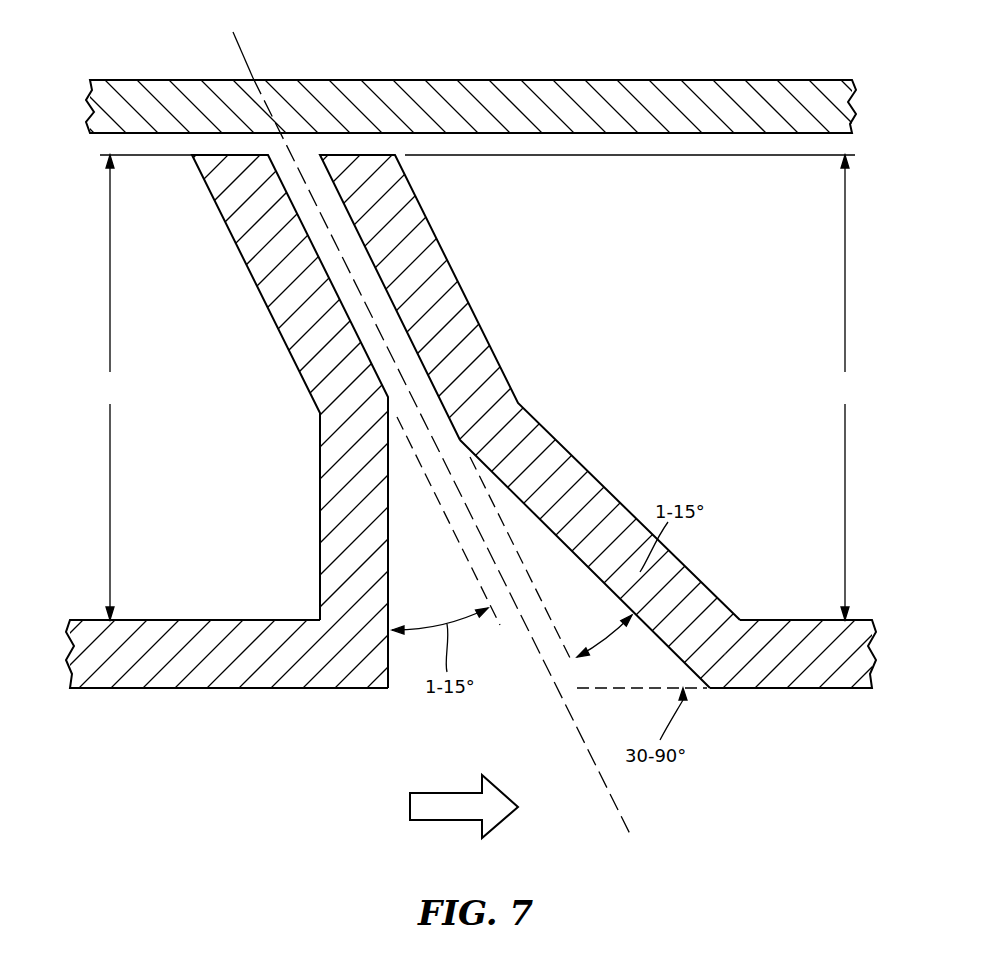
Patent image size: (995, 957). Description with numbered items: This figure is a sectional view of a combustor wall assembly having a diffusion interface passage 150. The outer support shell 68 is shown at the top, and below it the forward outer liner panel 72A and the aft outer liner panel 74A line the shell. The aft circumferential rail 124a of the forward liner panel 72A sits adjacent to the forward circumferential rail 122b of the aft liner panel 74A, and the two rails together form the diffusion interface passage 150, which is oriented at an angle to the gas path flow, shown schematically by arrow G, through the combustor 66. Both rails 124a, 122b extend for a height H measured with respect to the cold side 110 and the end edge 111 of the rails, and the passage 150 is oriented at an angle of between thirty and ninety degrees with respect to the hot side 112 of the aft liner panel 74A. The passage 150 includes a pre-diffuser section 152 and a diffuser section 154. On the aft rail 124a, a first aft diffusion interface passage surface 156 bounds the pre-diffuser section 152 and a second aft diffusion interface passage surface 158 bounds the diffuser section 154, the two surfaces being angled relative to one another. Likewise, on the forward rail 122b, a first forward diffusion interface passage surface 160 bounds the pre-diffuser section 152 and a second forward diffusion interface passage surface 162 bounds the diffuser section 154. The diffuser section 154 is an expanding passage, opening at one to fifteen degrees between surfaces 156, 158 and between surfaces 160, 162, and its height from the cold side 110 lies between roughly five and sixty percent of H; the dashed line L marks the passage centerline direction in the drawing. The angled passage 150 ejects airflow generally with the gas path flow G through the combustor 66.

The outer support shell 68 is at (533, 105).
The forward outer liner panel 72A is at (175, 690).
The aft outer liner panel 74A is at (817, 660).
The cold side 110 is at (150, 620).
The end edge 111 is at (370, 155).
The hot side 112 is at (275, 690).
The forward circumferential rail 122b is at (515, 322).
The aft circumferential rail 124a is at (258, 366).
The diffusion interface passage 150 is at (302, 148).
The pre-diffuser section 152 is at (350, 236).
The diffuser section 154 is at (510, 500).
The first aft diffusion interface passage surface 156 is at (312, 268).
The second aft diffusion interface passage surface 158 is at (388, 490).
The first forward diffusion interface passage surface 160 is at (393, 276).
The second forward diffusion interface passage surface 162 is at (545, 522).
The combustor 66 is at (326, 824).
The reference line L is at (232, 48).
The gas path flow G is at (453, 790).
The height H is at (477, 387).